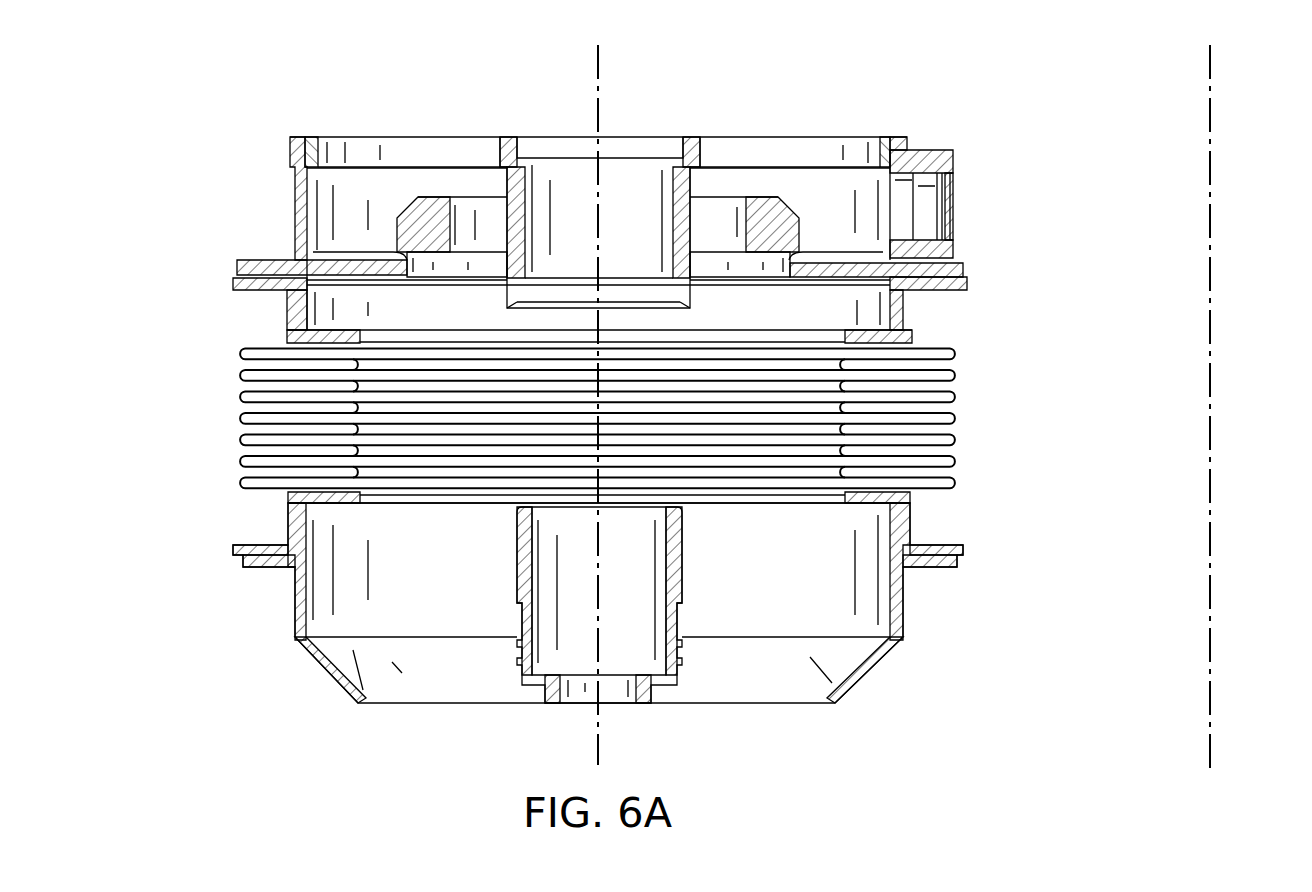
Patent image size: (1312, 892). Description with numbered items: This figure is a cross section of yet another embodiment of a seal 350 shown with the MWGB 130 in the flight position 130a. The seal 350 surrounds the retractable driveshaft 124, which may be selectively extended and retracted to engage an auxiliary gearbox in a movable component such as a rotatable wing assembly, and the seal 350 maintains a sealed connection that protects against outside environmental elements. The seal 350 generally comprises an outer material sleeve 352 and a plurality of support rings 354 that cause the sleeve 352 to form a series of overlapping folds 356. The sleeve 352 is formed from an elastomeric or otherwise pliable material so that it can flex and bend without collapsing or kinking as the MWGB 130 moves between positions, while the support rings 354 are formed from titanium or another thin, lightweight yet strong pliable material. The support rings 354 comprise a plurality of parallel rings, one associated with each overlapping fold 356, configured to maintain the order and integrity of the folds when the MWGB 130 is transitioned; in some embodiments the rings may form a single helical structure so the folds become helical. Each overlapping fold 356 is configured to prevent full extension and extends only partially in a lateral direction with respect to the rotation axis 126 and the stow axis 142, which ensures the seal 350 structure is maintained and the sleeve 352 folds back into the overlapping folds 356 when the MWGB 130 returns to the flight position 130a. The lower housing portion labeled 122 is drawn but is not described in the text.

The lower housing portion 122 is at (295, 598).
The retractable driveshaft 124 is at (517, 590).
The rotation axis 126 is at (598, 66).
The MWGB 130 is at (396, 137).
The flight position 130a is at (296, 198).
The stow axis 142 is at (1212, 136).
The seal 350 is at (236, 370).
The outer material sleeve 352 is at (240, 420).
The support rings 354 is at (955, 396).
The overlapping folds 356 is at (955, 353).